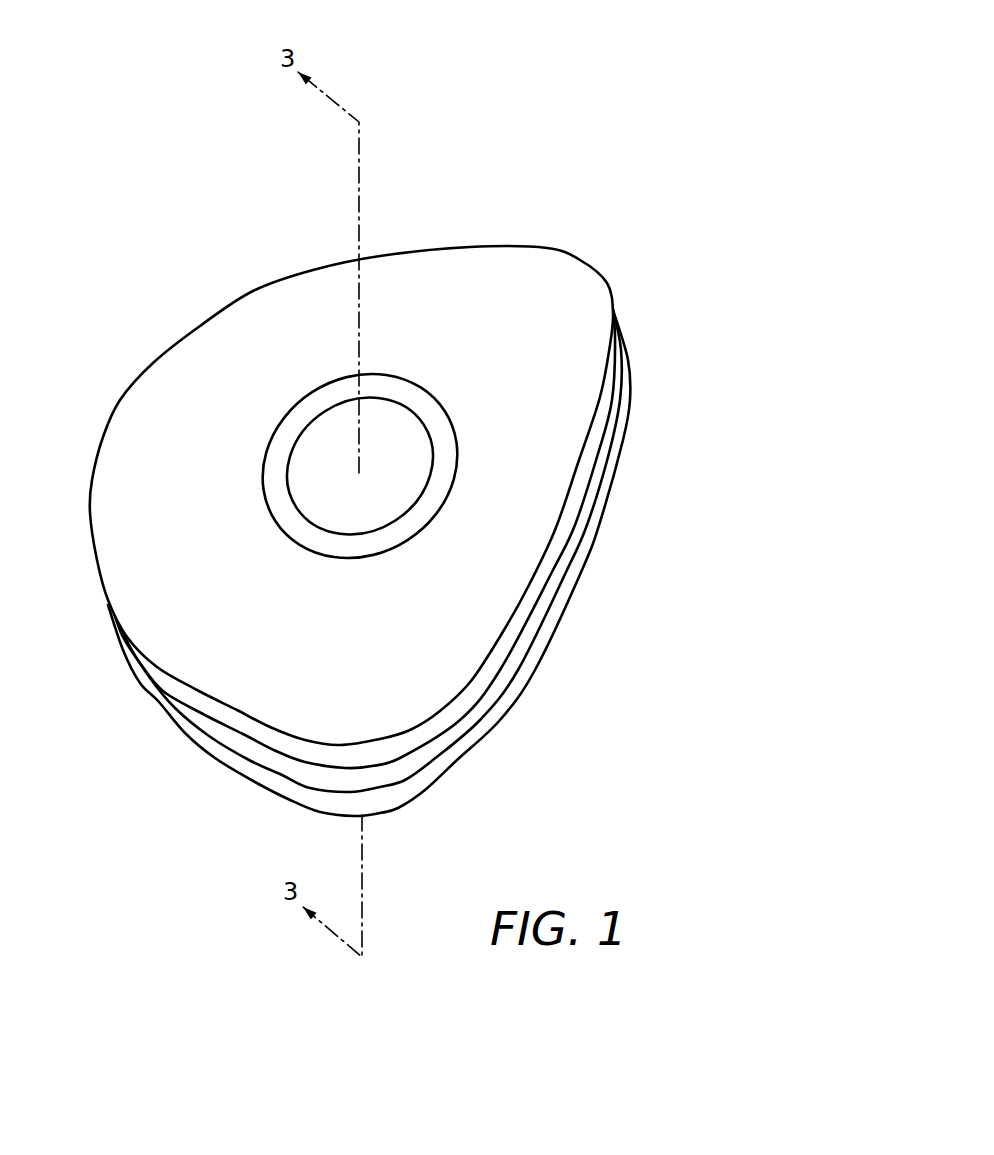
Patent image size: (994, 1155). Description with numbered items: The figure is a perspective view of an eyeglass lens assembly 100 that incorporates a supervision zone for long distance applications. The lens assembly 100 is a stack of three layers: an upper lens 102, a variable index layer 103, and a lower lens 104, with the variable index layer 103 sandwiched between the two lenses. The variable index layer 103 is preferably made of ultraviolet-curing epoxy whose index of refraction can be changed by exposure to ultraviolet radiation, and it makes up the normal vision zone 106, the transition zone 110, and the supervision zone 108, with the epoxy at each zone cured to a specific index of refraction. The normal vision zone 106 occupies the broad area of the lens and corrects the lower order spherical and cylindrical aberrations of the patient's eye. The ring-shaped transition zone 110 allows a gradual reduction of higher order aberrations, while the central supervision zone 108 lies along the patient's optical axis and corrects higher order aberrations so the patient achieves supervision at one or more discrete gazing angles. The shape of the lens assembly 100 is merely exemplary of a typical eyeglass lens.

The lens assembly 100 is at (433, 448).
The upper lens 102 is at (622, 339).
The variable index layer 103 is at (628, 364).
The lower lens 104 is at (634, 394).
The normal vision zone 106 is at (493, 296).
The supervision zone 108 is at (327, 475).
The transition zone 110 is at (383, 384).